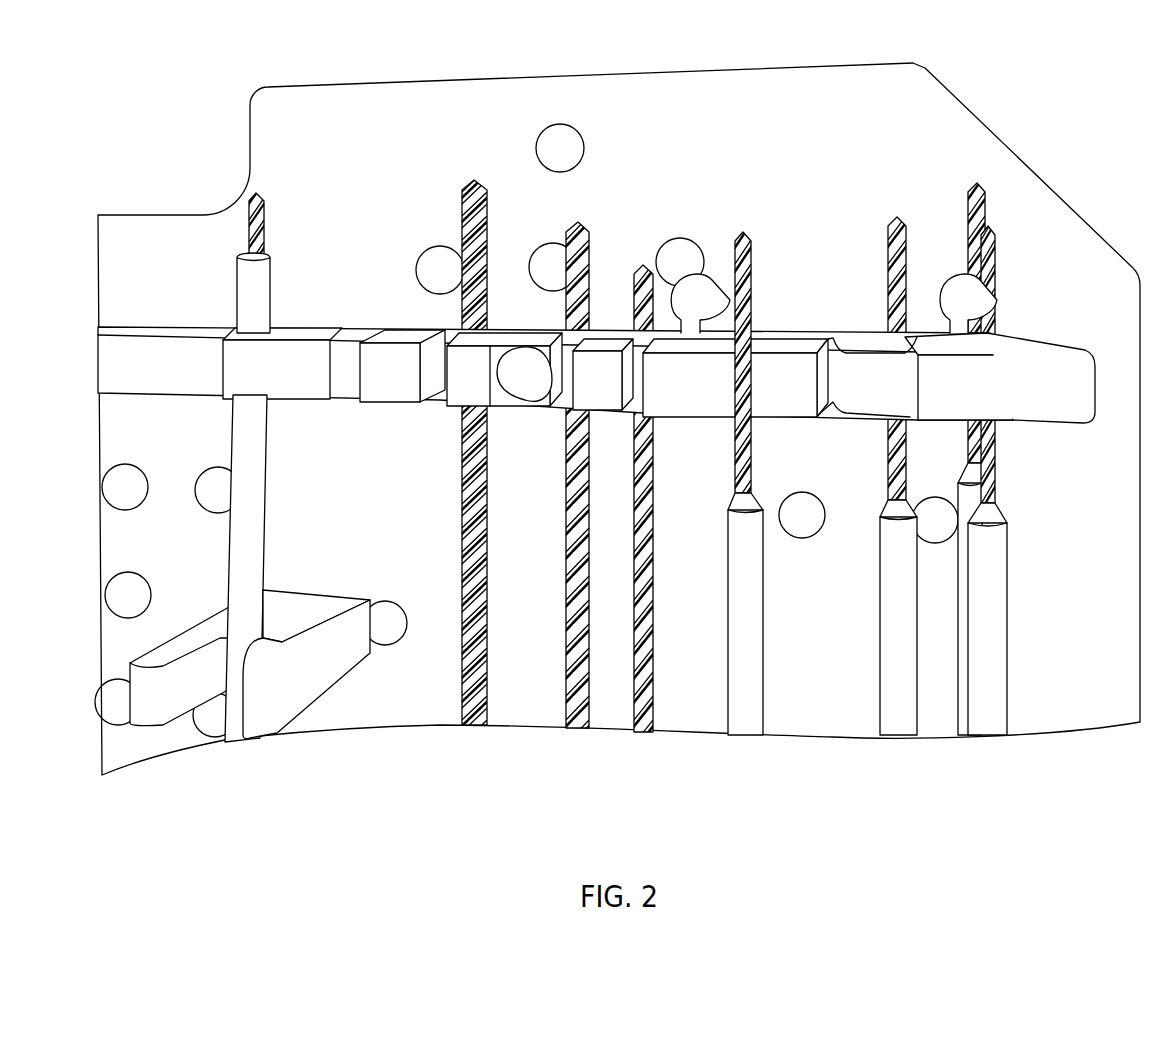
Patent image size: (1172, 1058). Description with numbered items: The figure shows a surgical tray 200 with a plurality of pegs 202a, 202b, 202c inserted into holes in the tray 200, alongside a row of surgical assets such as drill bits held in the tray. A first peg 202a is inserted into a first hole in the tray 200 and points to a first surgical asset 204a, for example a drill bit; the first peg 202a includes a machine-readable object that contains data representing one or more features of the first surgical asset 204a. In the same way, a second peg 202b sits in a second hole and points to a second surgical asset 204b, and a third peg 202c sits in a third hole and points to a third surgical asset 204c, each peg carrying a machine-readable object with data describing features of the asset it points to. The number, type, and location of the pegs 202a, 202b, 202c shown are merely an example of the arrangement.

The surgical tray 200 is at (1059, 92).
The first peg 202a is at (530, 365).
The second peg 202b is at (700, 297).
The third peg 202c is at (960, 297).
The first surgical asset 204a is at (565, 235).
The second surgical asset 204b is at (734, 236).
The third surgical asset 204c is at (970, 195).